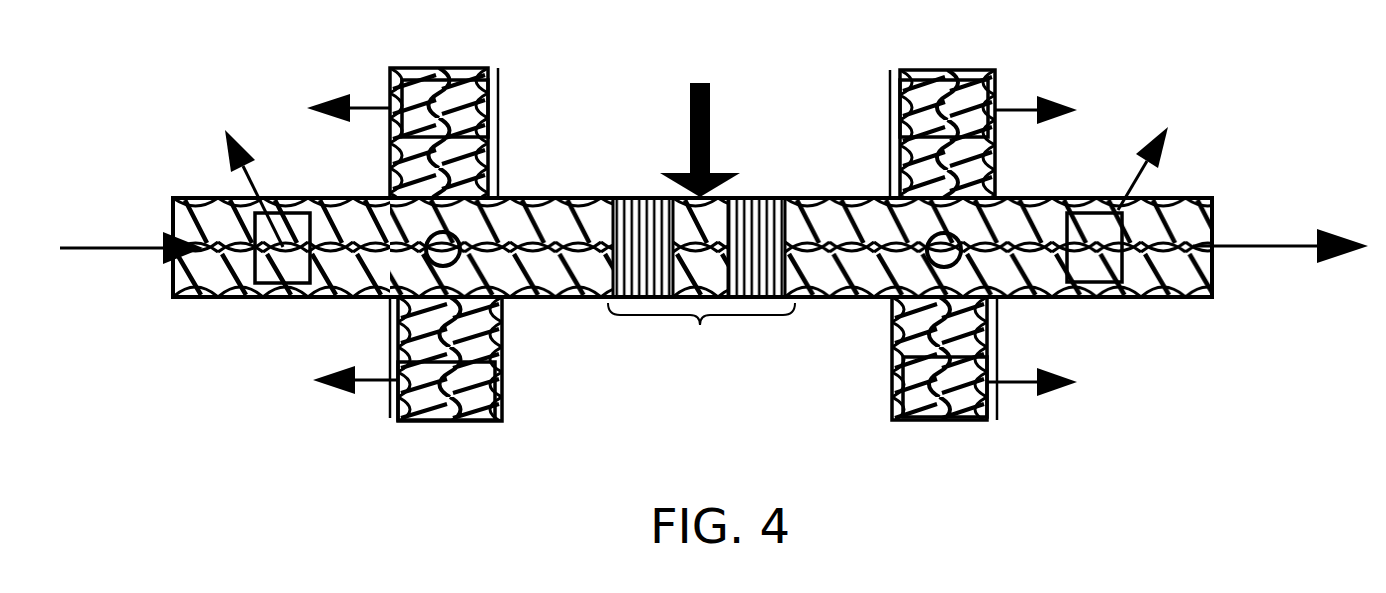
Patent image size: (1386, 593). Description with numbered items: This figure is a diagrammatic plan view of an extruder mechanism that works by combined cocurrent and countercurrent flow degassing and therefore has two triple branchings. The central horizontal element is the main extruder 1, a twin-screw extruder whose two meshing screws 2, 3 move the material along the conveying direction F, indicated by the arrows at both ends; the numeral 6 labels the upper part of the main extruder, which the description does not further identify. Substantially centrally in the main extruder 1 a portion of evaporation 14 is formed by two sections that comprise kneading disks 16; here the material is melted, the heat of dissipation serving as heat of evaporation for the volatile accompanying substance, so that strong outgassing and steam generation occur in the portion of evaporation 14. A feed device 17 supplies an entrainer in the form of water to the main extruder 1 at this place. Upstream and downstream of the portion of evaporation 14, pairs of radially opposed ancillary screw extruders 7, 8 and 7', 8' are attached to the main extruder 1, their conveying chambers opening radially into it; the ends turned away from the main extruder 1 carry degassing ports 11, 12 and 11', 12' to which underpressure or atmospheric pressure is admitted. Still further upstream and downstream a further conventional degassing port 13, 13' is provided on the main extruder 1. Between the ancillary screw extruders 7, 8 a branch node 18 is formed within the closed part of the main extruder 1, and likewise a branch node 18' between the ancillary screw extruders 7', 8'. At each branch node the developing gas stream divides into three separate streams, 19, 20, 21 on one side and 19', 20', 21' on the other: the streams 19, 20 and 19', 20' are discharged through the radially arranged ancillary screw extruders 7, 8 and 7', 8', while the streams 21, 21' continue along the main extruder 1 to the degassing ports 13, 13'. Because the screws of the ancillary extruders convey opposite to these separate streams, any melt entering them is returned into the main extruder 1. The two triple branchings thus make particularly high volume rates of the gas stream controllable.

The main extruder 1 is at (810, 182).
The screw 2 is at (858, 225).
The screw 3 is at (820, 285).
The upper layer of horizontal member 6 is at (540, 197).
The ancillary screw extruder 7 is at (470, 125).
The ancillary screw extruder 7' is at (966, 134).
The ancillary screw extruder 8 is at (471, 374).
The ancillary screw extruder 8' is at (976, 358).
The degassing port 11 is at (445, 76).
The degassing port 11' is at (944, 76).
The degassing port 12 is at (447, 422).
The degassing port 12' is at (948, 420).
The degassing port 13 is at (279, 285).
The degassing port 13' is at (1116, 287).
The portion of evaporation 14 is at (701, 281).
The kneading disks 16 is at (632, 207).
The feed device 17 is at (708, 120).
The branch node 18 is at (495, 295).
The branch node 18' is at (902, 295).
The separate stream 19 is at (348, 87).
The separate stream 19' is at (1036, 88).
The separate stream 20 is at (355, 408).
The separate stream 20' is at (1032, 409).
The separate stream 21 is at (263, 188).
The separate stream 21' is at (1124, 168).
The conveying direction F is at (110, 246).